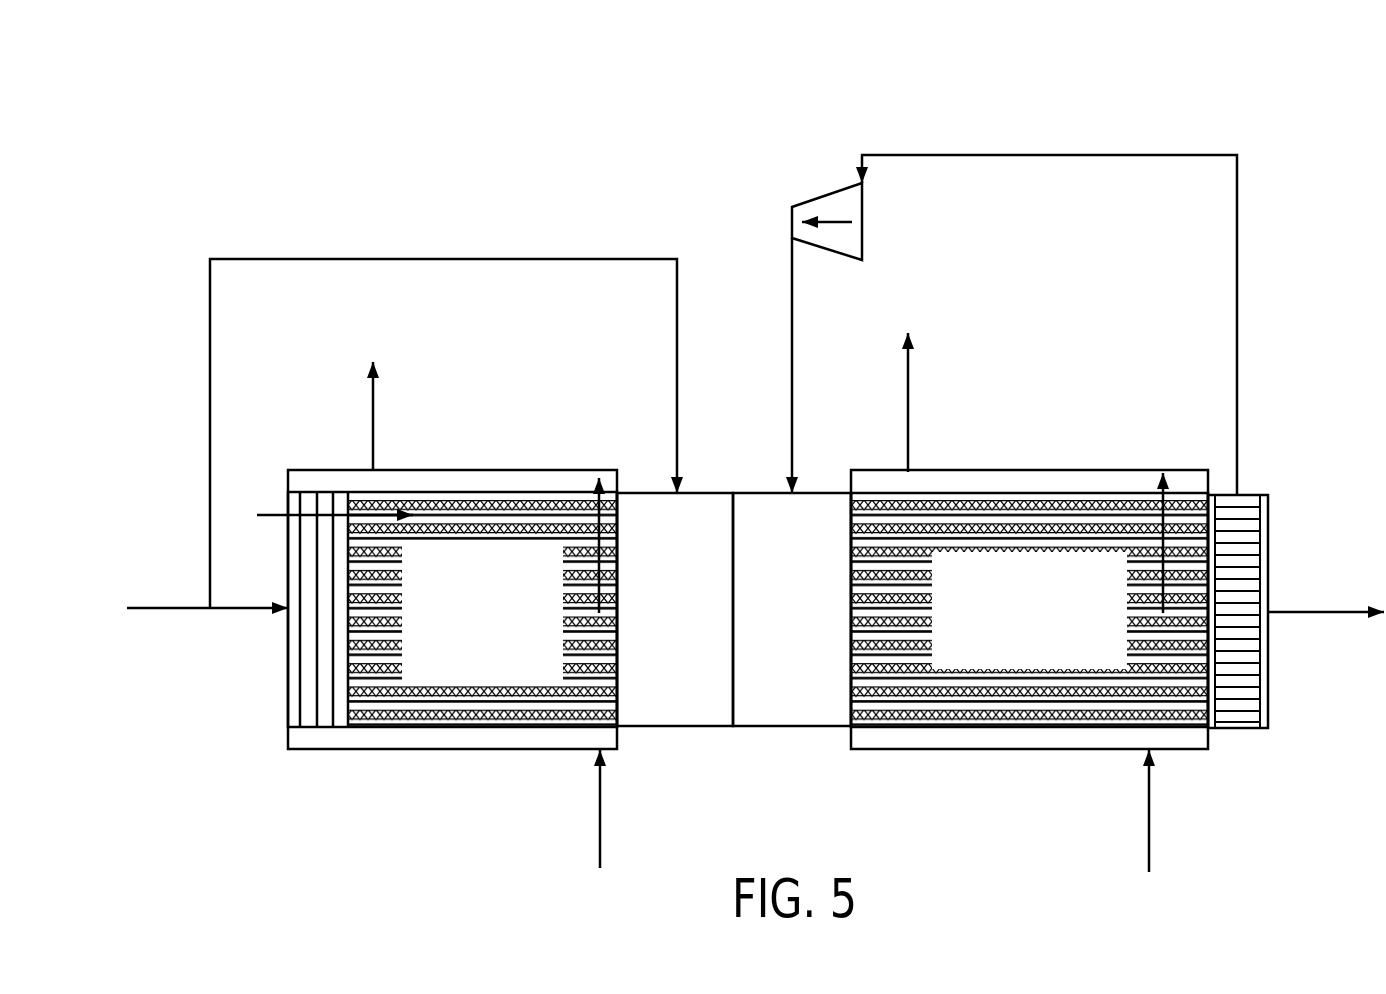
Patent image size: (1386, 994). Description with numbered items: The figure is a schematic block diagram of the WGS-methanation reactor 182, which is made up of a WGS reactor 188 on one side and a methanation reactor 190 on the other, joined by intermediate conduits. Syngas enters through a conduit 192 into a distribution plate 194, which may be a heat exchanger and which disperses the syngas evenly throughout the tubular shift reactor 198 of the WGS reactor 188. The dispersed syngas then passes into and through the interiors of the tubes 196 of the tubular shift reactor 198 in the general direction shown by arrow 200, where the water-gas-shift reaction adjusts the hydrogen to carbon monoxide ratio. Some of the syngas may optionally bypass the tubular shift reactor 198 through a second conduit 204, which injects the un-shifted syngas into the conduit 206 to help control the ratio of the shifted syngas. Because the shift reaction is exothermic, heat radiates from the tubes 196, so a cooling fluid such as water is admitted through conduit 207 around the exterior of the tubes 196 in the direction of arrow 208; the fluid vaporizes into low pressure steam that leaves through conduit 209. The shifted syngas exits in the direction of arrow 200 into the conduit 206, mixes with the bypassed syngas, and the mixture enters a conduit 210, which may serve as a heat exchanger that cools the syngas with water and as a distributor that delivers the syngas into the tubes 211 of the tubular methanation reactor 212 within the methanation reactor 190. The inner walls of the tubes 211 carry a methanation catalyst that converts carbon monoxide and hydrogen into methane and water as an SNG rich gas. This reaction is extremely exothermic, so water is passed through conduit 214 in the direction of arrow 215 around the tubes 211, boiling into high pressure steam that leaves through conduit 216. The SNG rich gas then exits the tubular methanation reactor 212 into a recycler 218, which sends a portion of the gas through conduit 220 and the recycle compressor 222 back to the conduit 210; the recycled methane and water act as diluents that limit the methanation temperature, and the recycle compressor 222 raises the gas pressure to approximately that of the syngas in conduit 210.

The WGS-methanation reactor 182 is at (856, 84).
The WGS reactor 188 is at (471, 341).
The methanation reactor 190 is at (1013, 333).
The conduit 192 is at (152, 607).
The distribution plate 194 is at (285, 715).
The tubes 196 is at (412, 708).
The tubular shift reactor 198 is at (458, 470).
The arrow 200 is at (283, 514).
The second conduit 204 is at (677, 312).
The conduit 206 is at (702, 493).
The conduit 207 is at (600, 793).
The arrow 208 is at (597, 470).
The conduit 209 is at (373, 412).
The conduit 210 is at (781, 726).
The tubes 211 is at (953, 708).
The tubular methanation reactor 212 is at (1027, 472).
The conduit 214 is at (1149, 855).
The arrow 215 is at (1168, 517).
The conduit 216 is at (908, 397).
The recycler 218 is at (1252, 495).
The conduit 220 is at (1190, 155).
The recycle compressor 222 is at (862, 220).